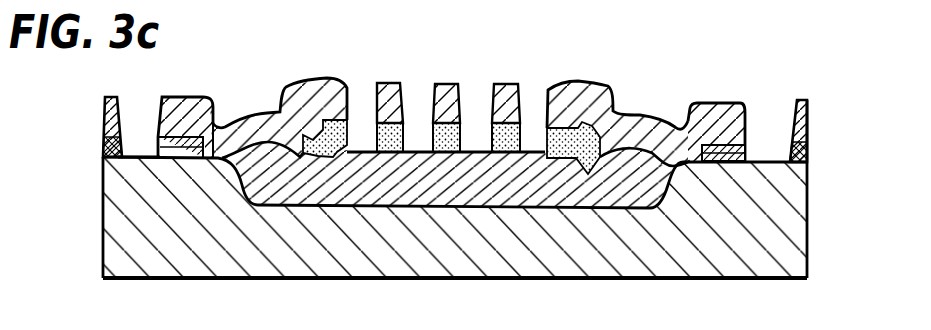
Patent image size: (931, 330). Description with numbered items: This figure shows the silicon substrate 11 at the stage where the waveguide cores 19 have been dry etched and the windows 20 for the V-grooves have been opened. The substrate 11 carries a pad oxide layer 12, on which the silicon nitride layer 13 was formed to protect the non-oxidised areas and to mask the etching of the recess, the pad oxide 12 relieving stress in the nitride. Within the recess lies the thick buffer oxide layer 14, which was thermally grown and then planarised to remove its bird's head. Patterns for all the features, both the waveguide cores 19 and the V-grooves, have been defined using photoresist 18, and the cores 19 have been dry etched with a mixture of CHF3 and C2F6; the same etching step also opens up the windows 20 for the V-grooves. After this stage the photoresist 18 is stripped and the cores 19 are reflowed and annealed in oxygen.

The silicon substrate 11 is at (190, 257).
The pad oxide layer 12 is at (808, 180).
The silicon nitride layer 13 is at (736, 128).
The buffer oxide layer 14 is at (447, 197).
The photoresist 18 is at (263, 112).
The waveguide cores 19 is at (500, 90).
The windows 20 is at (140, 153).